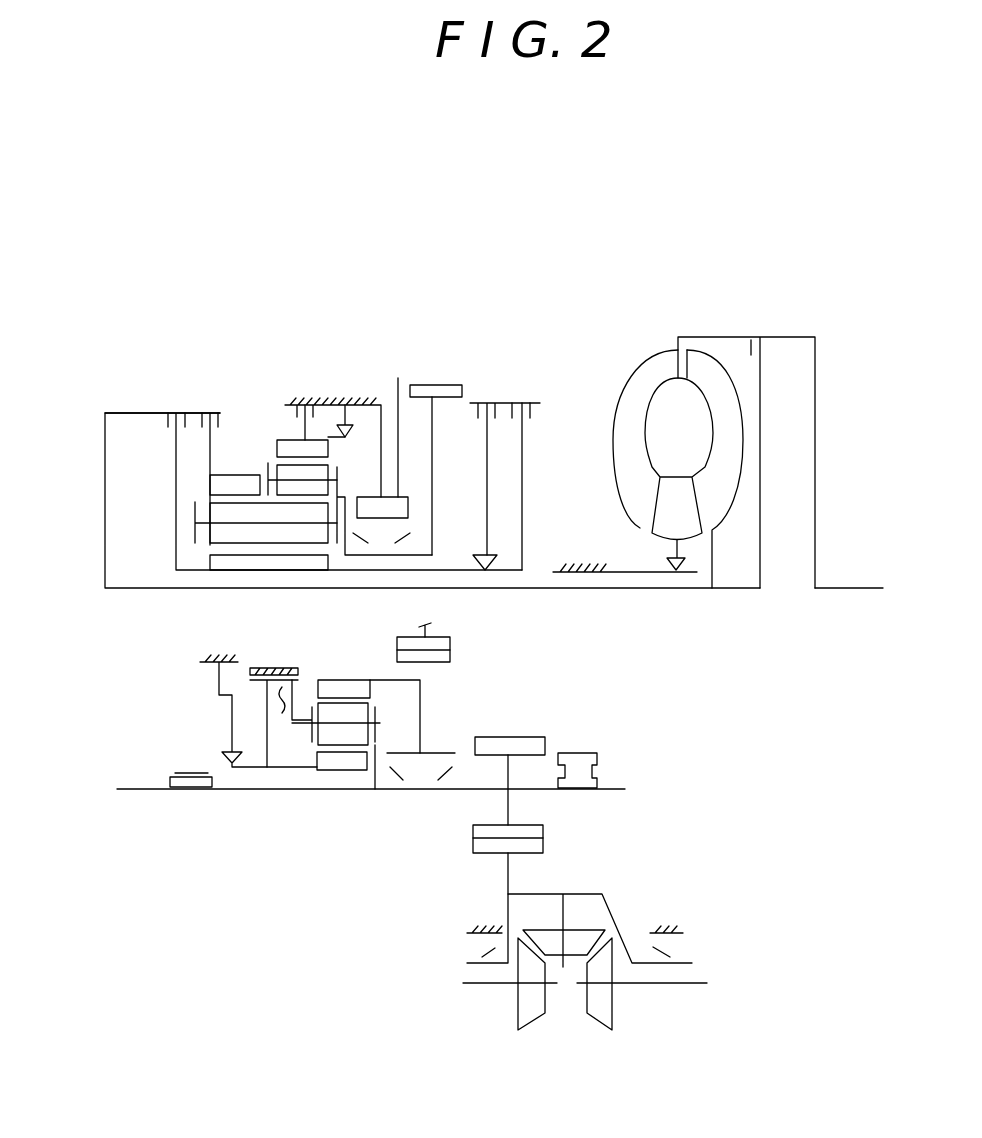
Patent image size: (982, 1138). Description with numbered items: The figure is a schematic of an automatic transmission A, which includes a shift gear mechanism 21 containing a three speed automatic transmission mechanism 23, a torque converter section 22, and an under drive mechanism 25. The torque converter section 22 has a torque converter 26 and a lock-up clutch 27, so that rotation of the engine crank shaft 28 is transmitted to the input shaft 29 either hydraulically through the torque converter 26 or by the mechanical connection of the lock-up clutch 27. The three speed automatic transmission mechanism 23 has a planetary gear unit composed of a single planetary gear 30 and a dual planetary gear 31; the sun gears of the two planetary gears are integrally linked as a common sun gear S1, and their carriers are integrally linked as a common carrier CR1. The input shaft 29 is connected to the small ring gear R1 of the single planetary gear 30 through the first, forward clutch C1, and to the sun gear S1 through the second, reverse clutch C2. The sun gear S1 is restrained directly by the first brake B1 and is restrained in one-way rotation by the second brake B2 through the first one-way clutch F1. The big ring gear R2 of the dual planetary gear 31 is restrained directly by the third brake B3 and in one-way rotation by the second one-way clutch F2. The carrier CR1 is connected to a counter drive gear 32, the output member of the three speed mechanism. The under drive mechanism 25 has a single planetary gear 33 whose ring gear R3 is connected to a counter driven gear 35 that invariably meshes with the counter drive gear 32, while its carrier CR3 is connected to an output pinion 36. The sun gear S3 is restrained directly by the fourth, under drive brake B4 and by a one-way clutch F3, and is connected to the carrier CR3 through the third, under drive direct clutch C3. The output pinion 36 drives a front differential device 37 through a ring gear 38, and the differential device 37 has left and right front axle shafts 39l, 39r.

The automatic transmission A is at (148, 303).
The shift gear mechanism 21 is at (142, 383).
The torque converter section 22 is at (725, 322).
The three speed automatic transmission mechanism 23 is at (318, 370).
The under drive mechanism 25 is at (150, 687).
The torque converter 26 is at (653, 380).
The lock-up clutch 27 is at (770, 353).
The engine crank shaft 28 is at (857, 588).
The input shaft 29 is at (667, 592).
The single planetary gear 30 is at (238, 427).
The dual planetary gear 31 is at (277, 427).
The counter drive gear 32 is at (442, 388).
The single planetary gear 33 is at (337, 678).
The counter driven gear 35 is at (443, 662).
The output pinion 36 is at (520, 743).
The front differential device 37 is at (613, 892).
The ring gear 38 is at (535, 845).
The left front axle shaft 39l is at (472, 985).
The right front axle shaft 39r is at (673, 985).
The first clutch C1 is at (214, 403).
The second clutch C2 is at (177, 403).
The third clutch C3 is at (325, 715).
The first brake B1 is at (529, 465).
The second brake B2 is at (505, 457).
The third brake B3 is at (332, 429).
The fourth brake B4 is at (274, 703).
The first one-way clutch F1 is at (473, 560).
The second one-way clutch F2 is at (354, 399).
The one-way clutch F3 is at (225, 757).
The ring gear R1 is at (242, 477).
The ring gear R2 is at (318, 443).
The ring gear R3 is at (353, 692).
The common sun gear S1 is at (250, 563).
The sun gear S3 is at (345, 770).
The common carrier CR1 is at (352, 478).
The carrier CR3 is at (380, 728).